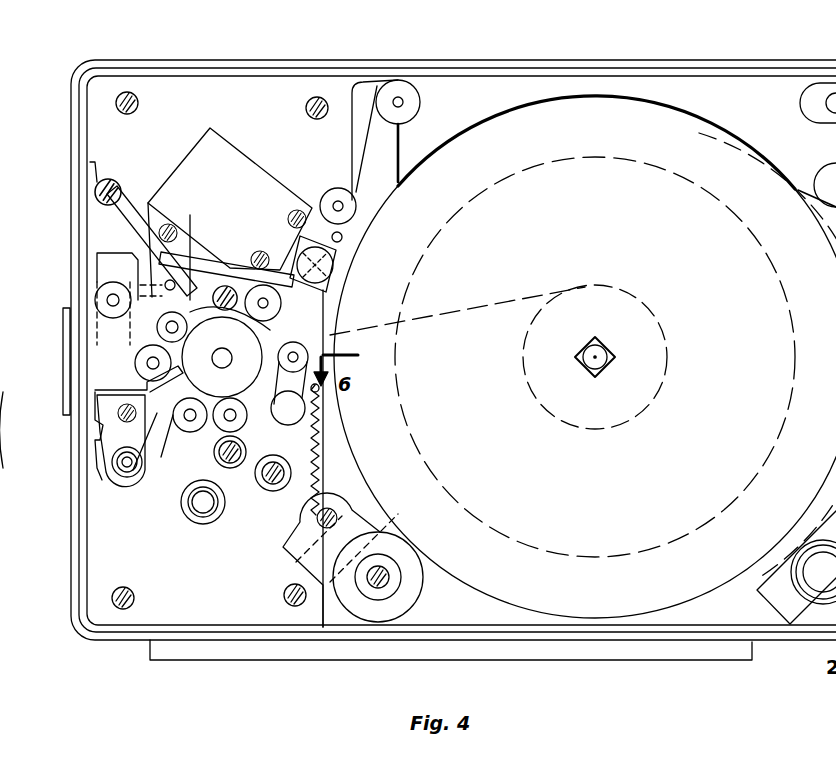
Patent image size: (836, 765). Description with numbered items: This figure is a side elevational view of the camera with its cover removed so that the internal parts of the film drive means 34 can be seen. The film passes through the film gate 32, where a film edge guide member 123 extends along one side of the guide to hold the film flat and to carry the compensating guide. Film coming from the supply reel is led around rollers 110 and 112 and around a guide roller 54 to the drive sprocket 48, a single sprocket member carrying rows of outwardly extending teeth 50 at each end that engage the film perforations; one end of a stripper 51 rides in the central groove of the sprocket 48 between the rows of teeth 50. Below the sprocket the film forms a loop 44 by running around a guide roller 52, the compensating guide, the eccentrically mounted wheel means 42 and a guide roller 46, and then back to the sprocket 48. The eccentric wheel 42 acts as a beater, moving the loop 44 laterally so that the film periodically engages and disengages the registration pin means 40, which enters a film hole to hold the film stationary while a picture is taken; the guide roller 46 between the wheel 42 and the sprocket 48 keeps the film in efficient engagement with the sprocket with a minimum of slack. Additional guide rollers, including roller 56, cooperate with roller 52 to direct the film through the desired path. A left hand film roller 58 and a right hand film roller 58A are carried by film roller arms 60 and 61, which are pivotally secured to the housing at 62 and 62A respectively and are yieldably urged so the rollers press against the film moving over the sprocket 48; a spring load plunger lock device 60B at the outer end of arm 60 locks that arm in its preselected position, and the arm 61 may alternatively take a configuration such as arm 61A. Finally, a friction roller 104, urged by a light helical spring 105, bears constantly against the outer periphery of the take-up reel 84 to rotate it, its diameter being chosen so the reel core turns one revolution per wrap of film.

The film drive means 34 is at (455, 106).
The take-up reel 84 is at (668, 487).
The stripper 51 is at (338, 304).
The roller 110 is at (400, 90).
The roller 112 is at (344, 190).
The spring load plunger lock device 60B is at (108, 178).
The film roller arm 60 is at (133, 216).
The guide roller 54 is at (265, 286).
The pivot 62 is at (226, 286).
The film gate 32 is at (94, 262).
The film edge guide member 123 is at (110, 326).
The guide roller 52 is at (140, 358).
The drive sprocket 48 is at (140, 382).
The film roller arm 61A is at (2, 440).
The registration pin means 40 is at (103, 470).
The eccentrically mounted wheel means 42 is at (133, 496).
The loop 44 is at (173, 422).
The guide roller 46 is at (200, 427).
The left hand film roller 58 is at (187, 338).
The teeth 50 is at (190, 386).
The guide roller 56 is at (302, 348).
The film roller arm 61 is at (319, 390).
The right hand film roller 58A is at (305, 417).
The helical spring 105 is at (322, 456).
The pivot 62A is at (232, 470).
The friction roller 104 is at (372, 610).